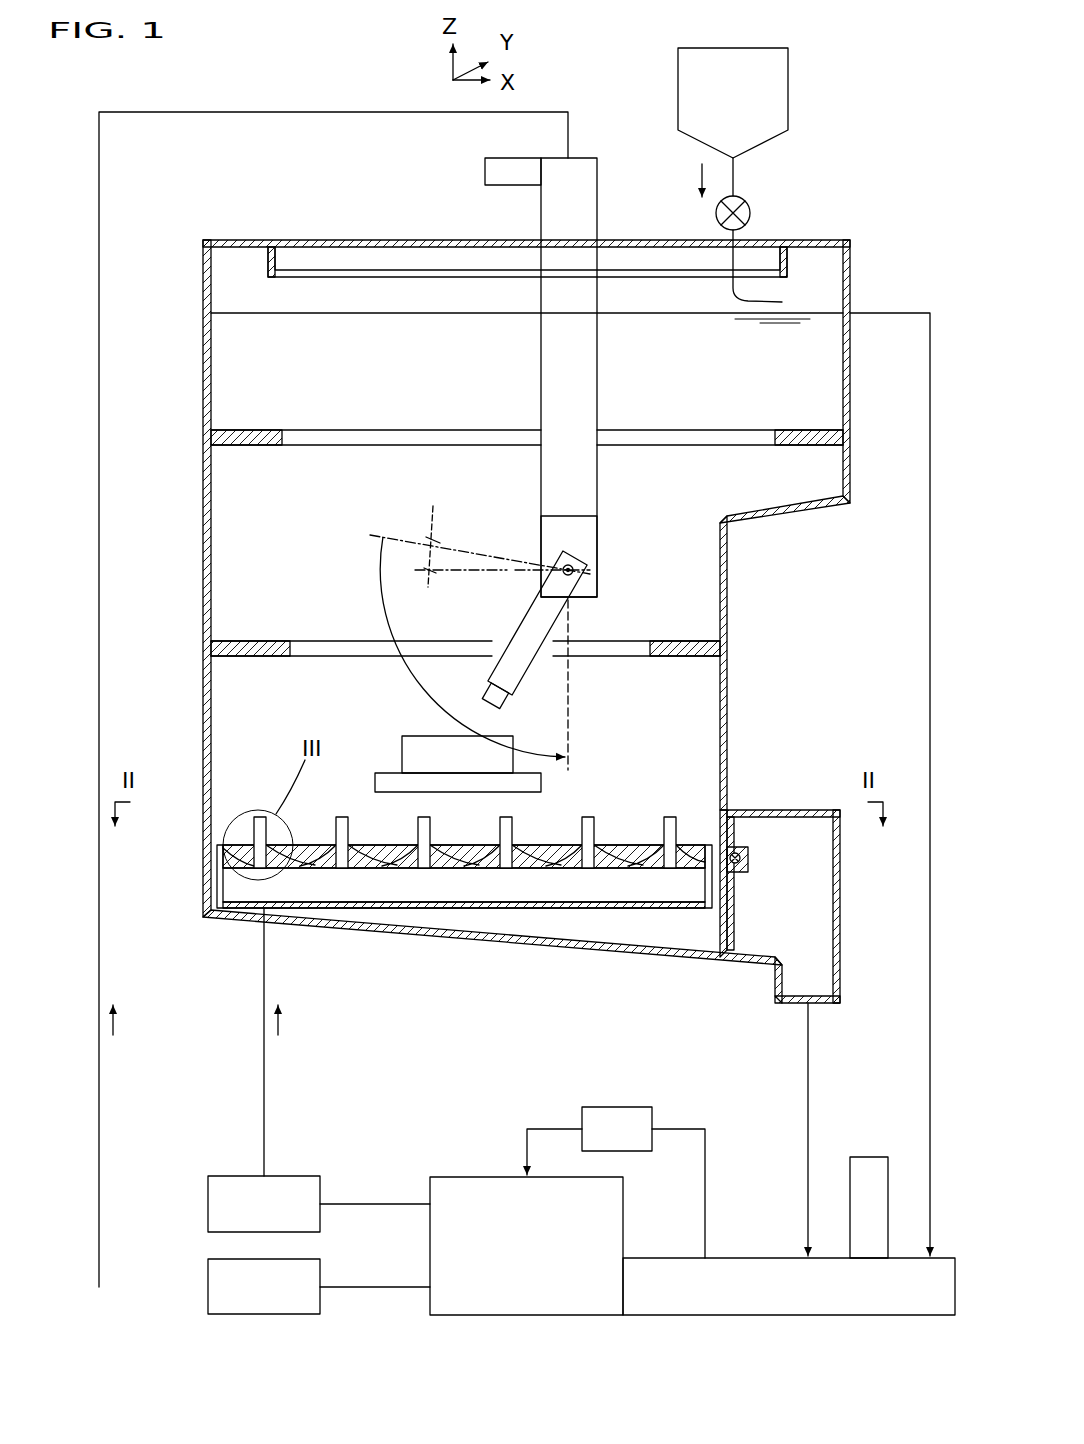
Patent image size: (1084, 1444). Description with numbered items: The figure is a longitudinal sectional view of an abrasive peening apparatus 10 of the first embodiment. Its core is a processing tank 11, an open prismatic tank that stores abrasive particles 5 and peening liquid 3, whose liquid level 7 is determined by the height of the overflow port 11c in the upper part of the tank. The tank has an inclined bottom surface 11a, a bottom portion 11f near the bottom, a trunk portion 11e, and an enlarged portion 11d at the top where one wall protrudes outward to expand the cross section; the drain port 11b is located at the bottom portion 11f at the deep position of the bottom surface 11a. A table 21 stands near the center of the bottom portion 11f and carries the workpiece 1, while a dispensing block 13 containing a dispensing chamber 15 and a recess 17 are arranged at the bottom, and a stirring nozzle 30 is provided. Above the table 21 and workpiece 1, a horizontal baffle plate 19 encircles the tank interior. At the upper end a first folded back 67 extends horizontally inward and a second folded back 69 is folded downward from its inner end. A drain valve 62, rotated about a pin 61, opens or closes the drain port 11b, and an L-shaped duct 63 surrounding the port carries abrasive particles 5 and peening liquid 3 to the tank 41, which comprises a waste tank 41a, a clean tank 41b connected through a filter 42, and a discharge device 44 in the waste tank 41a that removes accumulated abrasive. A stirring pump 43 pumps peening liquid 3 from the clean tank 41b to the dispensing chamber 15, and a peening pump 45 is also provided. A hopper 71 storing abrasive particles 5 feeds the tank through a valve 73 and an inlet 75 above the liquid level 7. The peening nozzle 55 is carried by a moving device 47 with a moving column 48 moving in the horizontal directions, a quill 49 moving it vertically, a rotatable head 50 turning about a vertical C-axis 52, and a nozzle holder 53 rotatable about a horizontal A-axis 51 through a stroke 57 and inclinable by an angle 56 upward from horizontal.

The abrasive peening apparatus 10 is at (948, 32).
The workpiece 1 is at (402, 745).
The peening liquid 3 is at (120, 1015).
The abrasive particles 5 is at (700, 186).
The liquid level 7 is at (340, 308).
The processing tank 11 is at (532, 587).
The bottom surface 11a is at (505, 950).
The drain port 11b is at (718, 950).
The overflow port 11c is at (851, 300).
The enlarged portion 11d is at (851, 406).
The trunk portion 11e is at (728, 695).
The bottom portion 11f is at (226, 813).
The dispensing block 13 is at (228, 886).
The dispensing chamber 15 is at (236, 889).
The recess 17 is at (584, 845).
The baffle plate 19 is at (800, 430).
The table 21 is at (378, 782).
The stirring nozzle 30 is at (664, 828).
The tank 41 is at (692, 1281).
The waste tank 41a is at (789, 1308).
The clean tank 41b is at (512, 1315).
The filter 42 is at (617, 1107).
The stirring pump 43 is at (300, 1176).
The discharge device 44 is at (866, 1157).
The peening pump 45 is at (272, 1314).
The moving device 47 is at (432, 205).
The moving column 48 is at (485, 172).
The quill 49 is at (597, 185).
The rotatable head 50 is at (597, 547).
The A-axis 51 is at (575, 572).
The C-axis 52 is at (571, 735).
The nozzle holder 53 is at (516, 630).
The peening nozzle 55 is at (505, 702).
The angle 56 is at (436, 522).
The stroke 57 is at (385, 610).
The pin 61 is at (744, 845).
The drain valve 62 is at (736, 905).
The duct 63 is at (810, 810).
The first folded back 67 is at (232, 240).
The second folded back 69 is at (276, 262).
The hopper 71 is at (790, 60).
The valve 73 is at (750, 212).
The inlet 75 is at (770, 300).